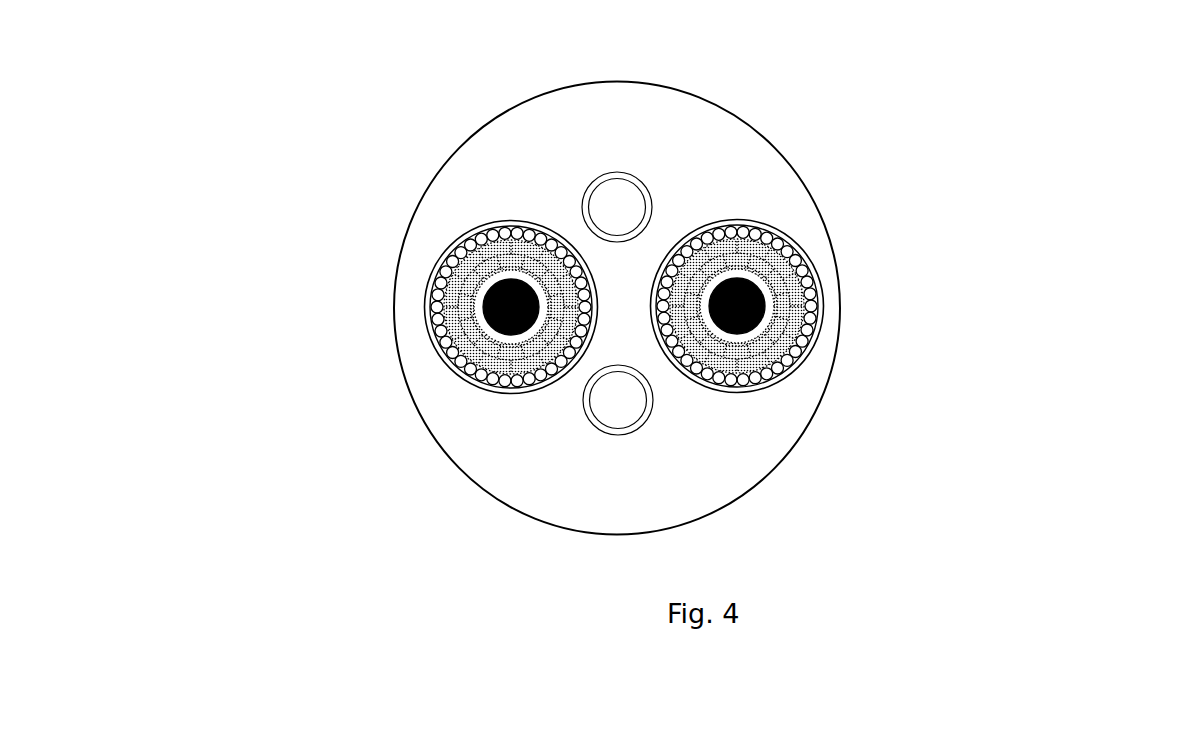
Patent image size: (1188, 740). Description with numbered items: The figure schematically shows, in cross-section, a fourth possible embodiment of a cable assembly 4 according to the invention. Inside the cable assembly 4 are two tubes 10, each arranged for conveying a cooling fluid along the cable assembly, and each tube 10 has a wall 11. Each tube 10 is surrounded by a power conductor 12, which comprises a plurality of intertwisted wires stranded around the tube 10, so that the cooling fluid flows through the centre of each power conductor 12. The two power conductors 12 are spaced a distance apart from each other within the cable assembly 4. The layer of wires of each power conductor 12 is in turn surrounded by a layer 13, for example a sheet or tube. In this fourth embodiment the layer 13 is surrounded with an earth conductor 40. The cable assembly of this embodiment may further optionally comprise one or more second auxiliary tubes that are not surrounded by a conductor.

The cable assembly 4 is at (1012, 207).
The tube 10 is at (505, 332).
The wall 11 is at (433, 270).
The power conductor 12 is at (522, 250).
The layer 13 is at (447, 338).
The earth conductor 40 is at (433, 292).